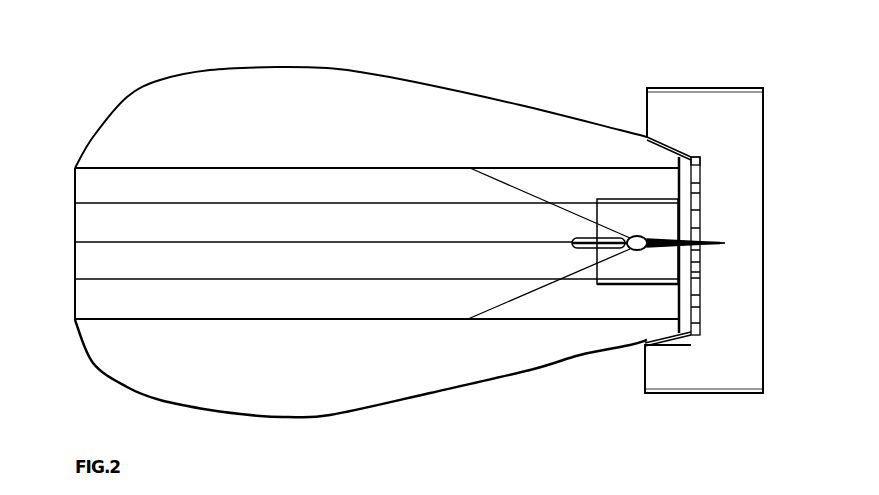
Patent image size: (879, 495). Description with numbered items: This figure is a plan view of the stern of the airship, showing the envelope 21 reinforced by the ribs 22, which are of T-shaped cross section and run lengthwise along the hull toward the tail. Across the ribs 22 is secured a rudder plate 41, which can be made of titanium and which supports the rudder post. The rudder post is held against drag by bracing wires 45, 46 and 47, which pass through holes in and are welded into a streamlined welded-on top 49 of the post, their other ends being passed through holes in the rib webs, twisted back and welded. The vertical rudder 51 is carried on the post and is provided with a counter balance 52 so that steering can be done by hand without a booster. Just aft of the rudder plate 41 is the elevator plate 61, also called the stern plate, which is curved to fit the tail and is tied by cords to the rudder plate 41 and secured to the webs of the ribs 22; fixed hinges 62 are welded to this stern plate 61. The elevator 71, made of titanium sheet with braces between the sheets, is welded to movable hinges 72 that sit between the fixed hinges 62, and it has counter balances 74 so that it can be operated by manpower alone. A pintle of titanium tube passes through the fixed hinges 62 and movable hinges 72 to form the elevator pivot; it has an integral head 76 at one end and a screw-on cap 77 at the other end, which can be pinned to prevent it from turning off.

The envelope 21 is at (415, 82).
The ribs 22 is at (352, 169).
The rudder plate 41 is at (638, 285).
The bracing wire 45 is at (533, 287).
The bracing wire 46 is at (510, 243).
The bracing wire 47 is at (480, 174).
The streamlined welded-on top 49 is at (630, 236).
The rudder 51 is at (713, 240).
The counter balance 52 is at (575, 238).
The elevator plate 61 is at (678, 186).
The fixed hinges 62 is at (698, 210).
The elevator 71 is at (756, 174).
The movable hinges 72 is at (700, 183).
The counter balances 74 is at (662, 100).
The integral head 76 is at (695, 337).
The screw-on cap 77 is at (702, 158).